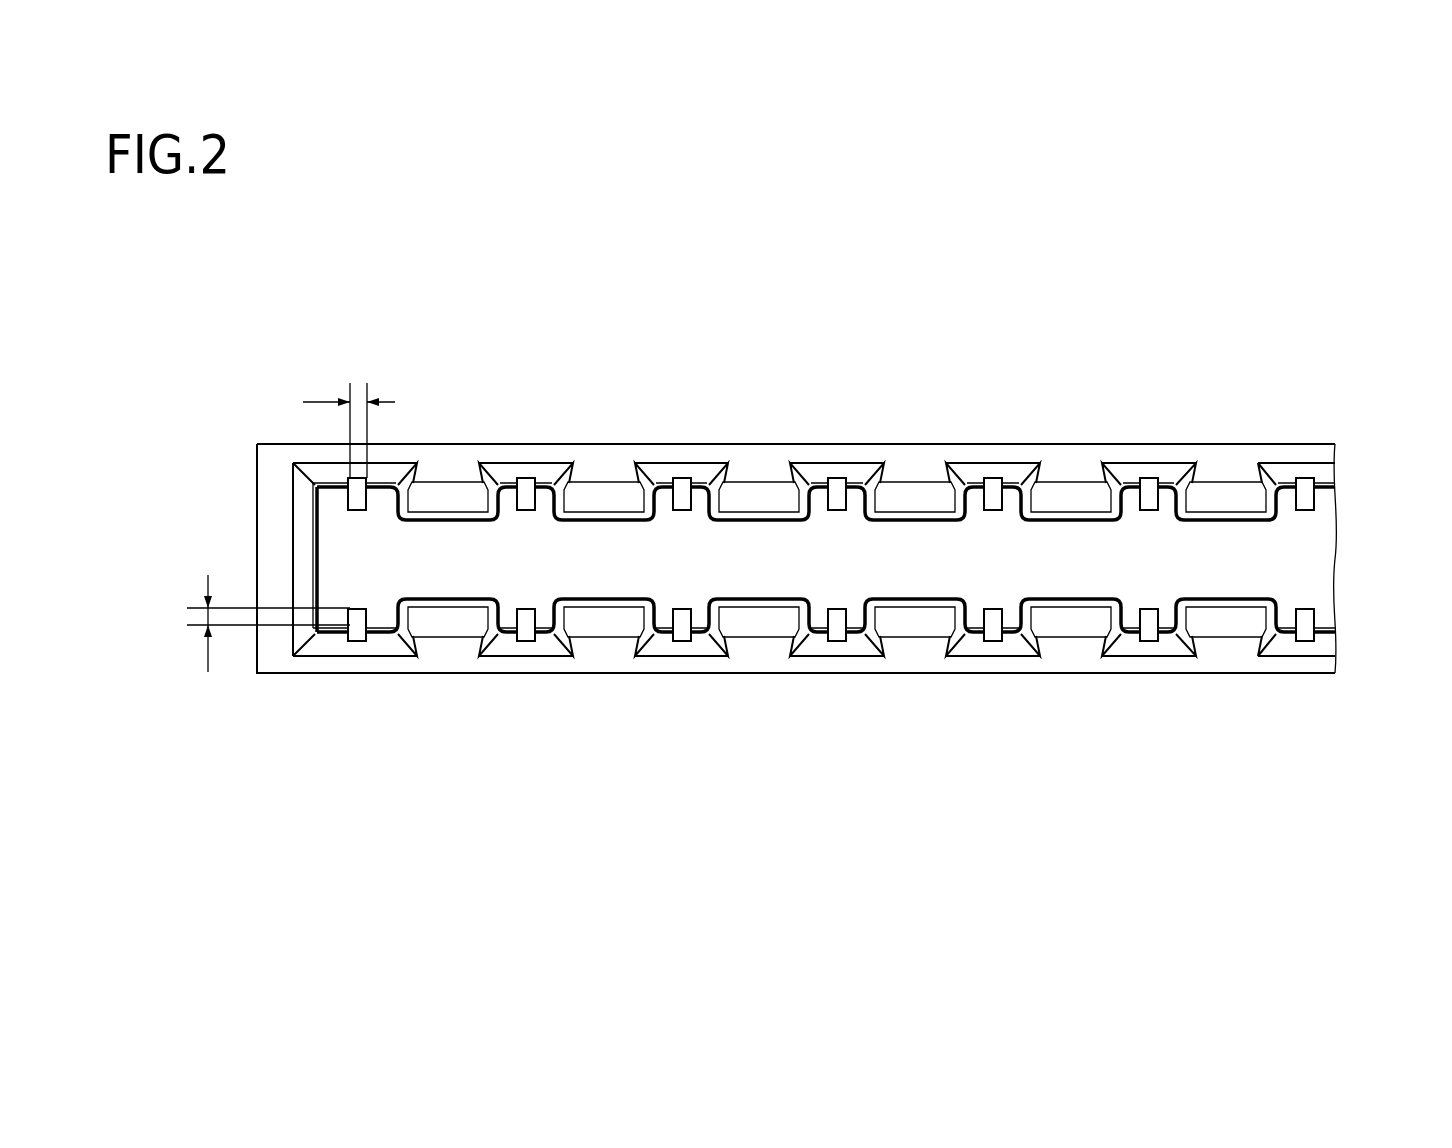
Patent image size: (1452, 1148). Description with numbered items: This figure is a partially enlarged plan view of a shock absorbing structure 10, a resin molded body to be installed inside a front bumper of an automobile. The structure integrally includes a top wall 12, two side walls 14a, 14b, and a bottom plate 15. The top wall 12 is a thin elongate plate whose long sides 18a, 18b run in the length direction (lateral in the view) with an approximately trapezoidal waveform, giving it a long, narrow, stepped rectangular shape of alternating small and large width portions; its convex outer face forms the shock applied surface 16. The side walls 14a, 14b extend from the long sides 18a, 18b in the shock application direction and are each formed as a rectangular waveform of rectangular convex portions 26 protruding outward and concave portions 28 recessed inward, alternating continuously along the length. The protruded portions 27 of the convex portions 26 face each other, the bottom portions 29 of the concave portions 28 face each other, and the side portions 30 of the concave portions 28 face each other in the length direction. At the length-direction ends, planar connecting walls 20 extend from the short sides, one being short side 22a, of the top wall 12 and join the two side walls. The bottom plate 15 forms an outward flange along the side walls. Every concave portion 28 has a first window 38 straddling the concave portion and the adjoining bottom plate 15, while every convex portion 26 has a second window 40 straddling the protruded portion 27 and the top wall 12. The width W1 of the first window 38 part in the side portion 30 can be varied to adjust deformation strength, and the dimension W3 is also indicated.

The shock absorbing structure 10 is at (801, 554).
The top wall 12 is at (1325, 566).
The side wall 14a is at (848, 452).
The side wall 14b is at (845, 668).
The bottom plate 15 is at (835, 570).
The shock applied surface 16 is at (355, 575).
The long side 18a is at (1288, 486).
The long side 18b is at (1320, 656).
The connecting wall 20 is at (252, 548).
The short side 22a is at (301, 518).
The convex portion 26 is at (835, 554).
The protruded portion 27 is at (835, 554).
The concave portion 28 is at (826, 570).
The bottom portion 29 is at (1275, 773).
The side portion 30 is at (405, 475).
The first window 38 is at (451, 488).
The second window 40 is at (360, 490).
The width of the part of the first window provided in the side portion W1 is at (261, 625).
The width W3 is at (348, 424).